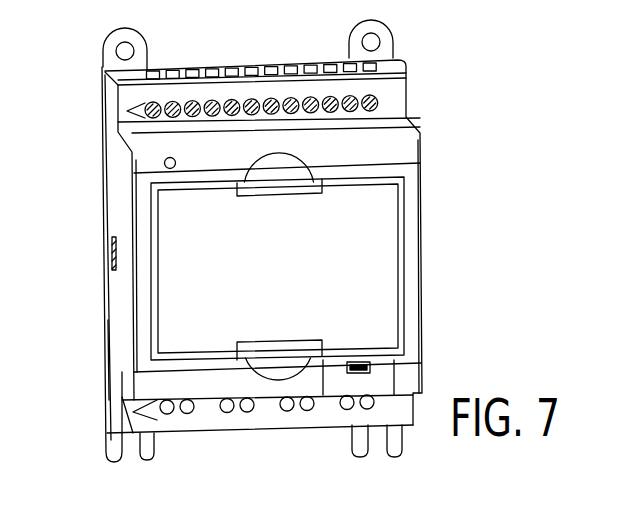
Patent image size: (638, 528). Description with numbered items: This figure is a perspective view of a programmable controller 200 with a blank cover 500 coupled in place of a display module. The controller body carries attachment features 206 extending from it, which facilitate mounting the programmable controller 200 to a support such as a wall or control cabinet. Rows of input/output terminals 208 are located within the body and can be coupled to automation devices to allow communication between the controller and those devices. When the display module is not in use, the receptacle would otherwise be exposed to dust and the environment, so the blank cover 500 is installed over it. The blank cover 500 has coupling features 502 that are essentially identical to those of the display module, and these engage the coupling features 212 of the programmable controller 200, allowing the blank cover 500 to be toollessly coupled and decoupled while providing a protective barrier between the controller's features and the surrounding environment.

The programmable controller 200 is at (430, 119).
The attachment features 206 is at (111, 34).
The input/output terminals 208 is at (127, 112).
The coupling features 212 is at (279, 162).
The blank cover 500 is at (383, 228).
The coupling features 502 is at (262, 185).